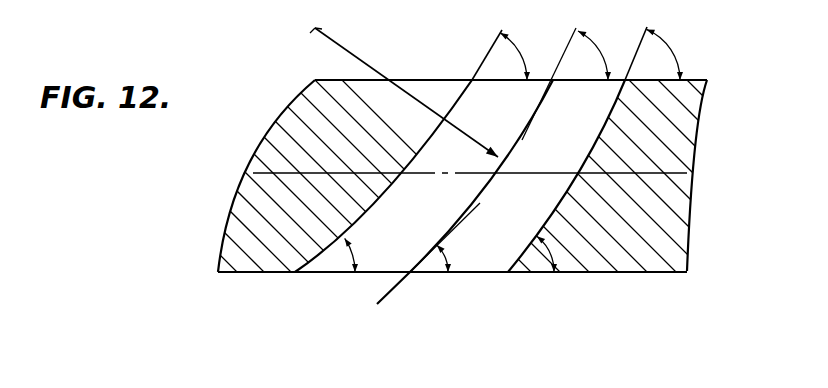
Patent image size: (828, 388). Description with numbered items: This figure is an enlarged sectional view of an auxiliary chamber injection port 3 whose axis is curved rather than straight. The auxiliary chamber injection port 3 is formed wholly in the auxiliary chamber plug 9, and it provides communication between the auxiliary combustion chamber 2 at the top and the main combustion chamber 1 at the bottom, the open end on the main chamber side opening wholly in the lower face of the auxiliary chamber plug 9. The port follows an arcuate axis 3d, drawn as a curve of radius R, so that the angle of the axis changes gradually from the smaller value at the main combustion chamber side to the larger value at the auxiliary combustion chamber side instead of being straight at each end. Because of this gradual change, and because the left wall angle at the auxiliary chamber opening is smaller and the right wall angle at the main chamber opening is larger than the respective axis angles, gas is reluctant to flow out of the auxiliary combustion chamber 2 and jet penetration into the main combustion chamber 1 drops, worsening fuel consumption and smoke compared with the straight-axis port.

The main combustion chamber 1 is at (418, 275).
The auxiliary combustion chamber 2 is at (447, 80).
The auxiliary chamber injection port 3 is at (607, 96).
The arcuate axis 3d is at (507, 153).
The auxiliary chamber plug 9 is at (617, 272).
The radius of curvature R is at (404, 86).